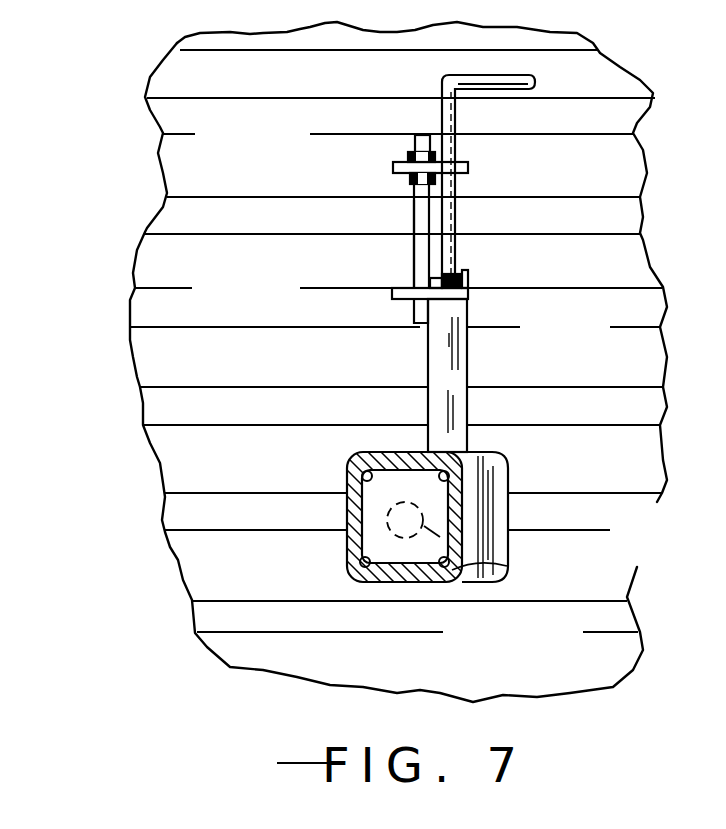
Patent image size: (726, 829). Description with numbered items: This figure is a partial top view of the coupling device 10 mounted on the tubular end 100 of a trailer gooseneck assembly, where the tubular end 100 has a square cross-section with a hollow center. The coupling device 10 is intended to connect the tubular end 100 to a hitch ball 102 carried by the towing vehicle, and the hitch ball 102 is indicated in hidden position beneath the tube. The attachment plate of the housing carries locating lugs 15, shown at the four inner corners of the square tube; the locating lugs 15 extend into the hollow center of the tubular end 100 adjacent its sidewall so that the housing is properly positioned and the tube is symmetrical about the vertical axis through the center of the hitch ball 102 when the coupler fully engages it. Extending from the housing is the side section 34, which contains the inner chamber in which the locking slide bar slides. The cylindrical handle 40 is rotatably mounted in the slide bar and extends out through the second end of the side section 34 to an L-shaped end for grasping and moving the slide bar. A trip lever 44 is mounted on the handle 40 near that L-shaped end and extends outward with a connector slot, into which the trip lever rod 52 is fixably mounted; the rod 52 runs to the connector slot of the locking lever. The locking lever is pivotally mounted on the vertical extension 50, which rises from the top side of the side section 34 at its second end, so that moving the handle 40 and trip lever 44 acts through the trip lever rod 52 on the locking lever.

The coupling device 10 is at (483, 312).
The locating lugs 15 is at (362, 474).
The side section 34 is at (467, 377).
The handle 40 is at (457, 117).
The trip lever 44 is at (393, 167).
The vertical extension 50 is at (424, 324).
The trip lever rod 52 is at (413, 263).
The tubular end 100 is at (418, 582).
The hitch ball 102 is at (508, 560).